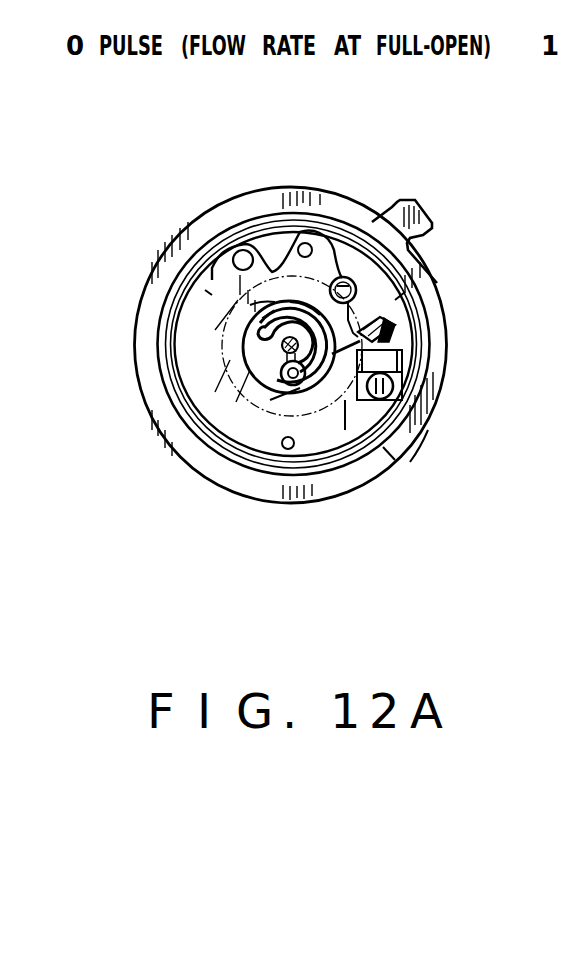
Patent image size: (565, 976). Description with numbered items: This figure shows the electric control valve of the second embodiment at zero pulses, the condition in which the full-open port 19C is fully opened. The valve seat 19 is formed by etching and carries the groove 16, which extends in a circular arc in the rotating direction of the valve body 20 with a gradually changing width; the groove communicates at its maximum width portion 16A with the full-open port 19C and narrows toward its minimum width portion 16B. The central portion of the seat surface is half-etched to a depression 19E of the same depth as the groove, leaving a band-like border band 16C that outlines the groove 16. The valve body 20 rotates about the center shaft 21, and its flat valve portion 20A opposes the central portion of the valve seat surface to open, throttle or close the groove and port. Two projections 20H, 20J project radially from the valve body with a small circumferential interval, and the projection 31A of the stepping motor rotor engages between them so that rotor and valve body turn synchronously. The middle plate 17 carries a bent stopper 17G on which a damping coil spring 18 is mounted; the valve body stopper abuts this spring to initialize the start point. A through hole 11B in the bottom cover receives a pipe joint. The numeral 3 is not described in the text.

The groove 16 is at (397, 347).
The maximum width portion 16A is at (345, 400).
The minimum width portion 16B is at (205, 290).
The border band 16C is at (296, 292).
The middle plate 17 is at (270, 305).
The stopper 17G is at (428, 430).
The damping coil spring 18 is at (383, 447).
The valve seat 19 is at (261, 332).
The full-open port 19C is at (295, 386).
The depression 19E is at (257, 313).
The valve body 20 is at (245, 410).
The flat valve portion 20A is at (270, 400).
The projection 20H is at (435, 380).
The projection 20J is at (395, 300).
The center shaft 21 is at (283, 347).
The through hole 11B is at (346, 276).
The projection 31A is at (393, 317).
The valve 3 is at (558, 135).